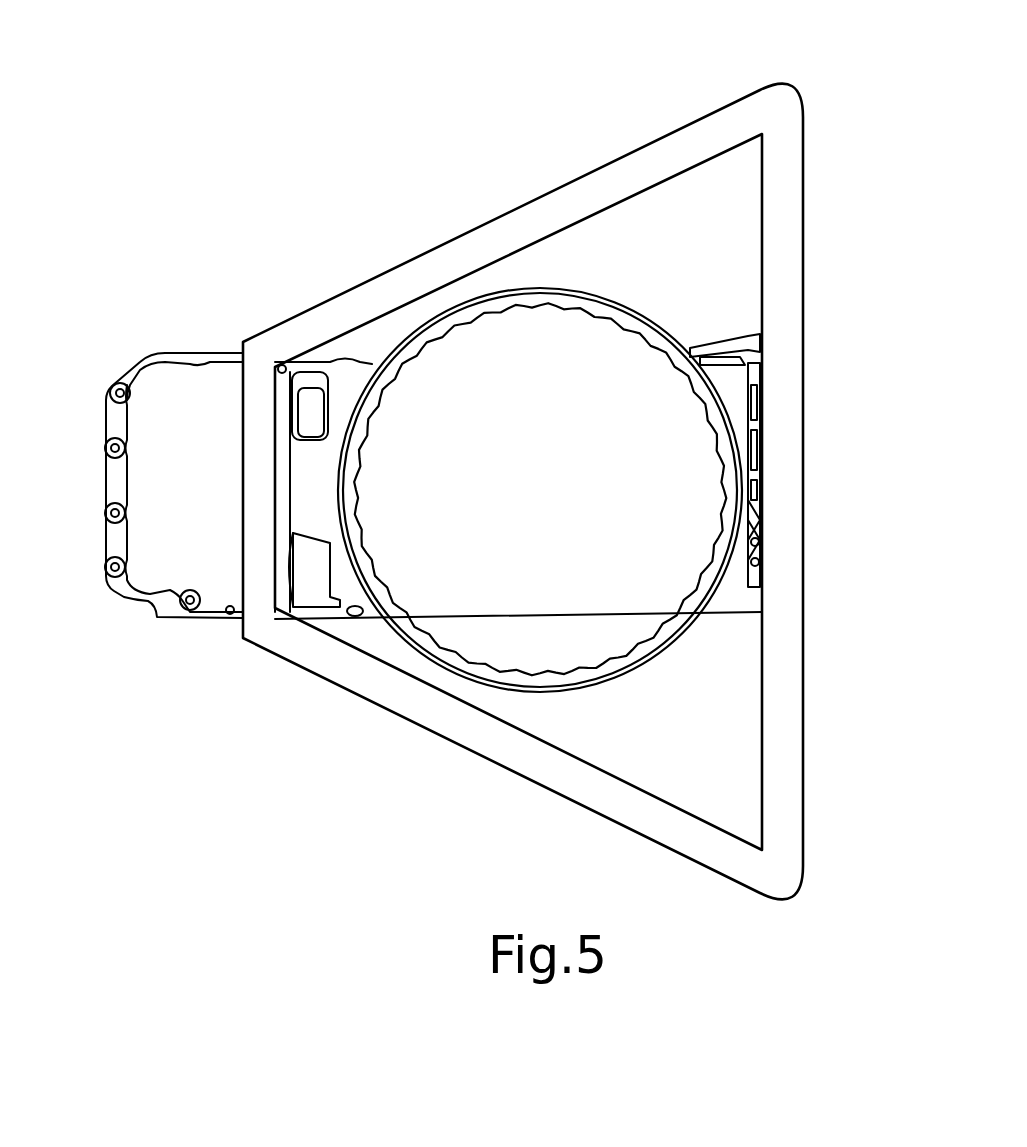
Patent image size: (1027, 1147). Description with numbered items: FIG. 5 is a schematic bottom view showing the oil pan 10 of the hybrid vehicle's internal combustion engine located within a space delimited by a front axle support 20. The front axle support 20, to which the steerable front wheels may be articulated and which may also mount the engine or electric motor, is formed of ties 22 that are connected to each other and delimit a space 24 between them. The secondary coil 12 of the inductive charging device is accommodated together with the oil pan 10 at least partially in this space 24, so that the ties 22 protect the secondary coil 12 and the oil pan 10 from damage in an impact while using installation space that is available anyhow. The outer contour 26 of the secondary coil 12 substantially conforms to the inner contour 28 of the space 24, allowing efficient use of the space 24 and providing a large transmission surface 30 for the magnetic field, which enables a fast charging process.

The oil pan 10 is at (730, 600).
The secondary coil 12 is at (682, 479).
The front axle support 20 is at (542, 456).
The ties 22 is at (462, 248).
The space 24 is at (661, 279).
The outer contour 26 is at (568, 288).
The inner contour 28 is at (727, 170).
The transmission surface 30 is at (590, 421).